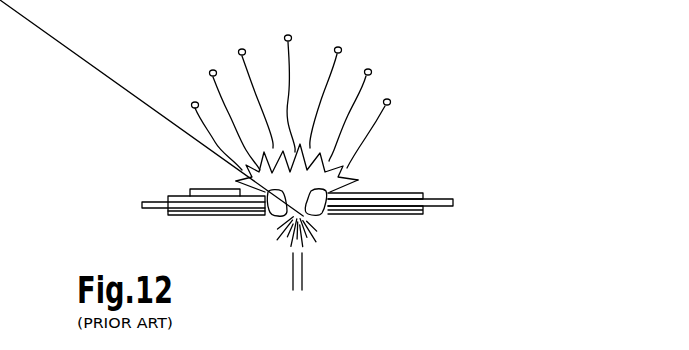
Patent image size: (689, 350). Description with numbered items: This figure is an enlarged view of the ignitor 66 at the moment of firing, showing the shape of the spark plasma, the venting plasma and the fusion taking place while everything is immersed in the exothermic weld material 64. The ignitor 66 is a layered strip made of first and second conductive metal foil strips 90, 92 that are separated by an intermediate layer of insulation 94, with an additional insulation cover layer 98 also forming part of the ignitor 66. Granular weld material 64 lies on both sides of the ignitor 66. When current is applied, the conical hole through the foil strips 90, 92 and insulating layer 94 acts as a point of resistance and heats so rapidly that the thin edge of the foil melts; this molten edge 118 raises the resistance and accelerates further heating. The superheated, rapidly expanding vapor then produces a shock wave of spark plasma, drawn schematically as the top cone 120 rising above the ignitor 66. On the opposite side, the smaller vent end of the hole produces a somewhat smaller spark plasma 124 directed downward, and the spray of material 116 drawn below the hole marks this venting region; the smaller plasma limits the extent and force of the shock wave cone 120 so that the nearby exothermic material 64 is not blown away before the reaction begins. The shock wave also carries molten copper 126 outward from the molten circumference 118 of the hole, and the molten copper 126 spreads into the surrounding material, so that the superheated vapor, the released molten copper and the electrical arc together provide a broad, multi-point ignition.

The exothermic weld material 64 is at (406, 85).
The ignitor 66 is at (118, 210).
The first conductive metal foil strip 90 is at (417, 193).
The second conductive metal foil strip 92 is at (413, 213).
The intermediate layer of insulation 94 is at (448, 203).
The insulation cover layer 98 is at (205, 188).
The spray of molten material 116 is at (253, 248).
The molten edge 118 is at (316, 215).
The top cone 120 is at (390, 158).
The smaller spark plasma 124 is at (293, 260).
The molten copper 126 is at (210, 71).